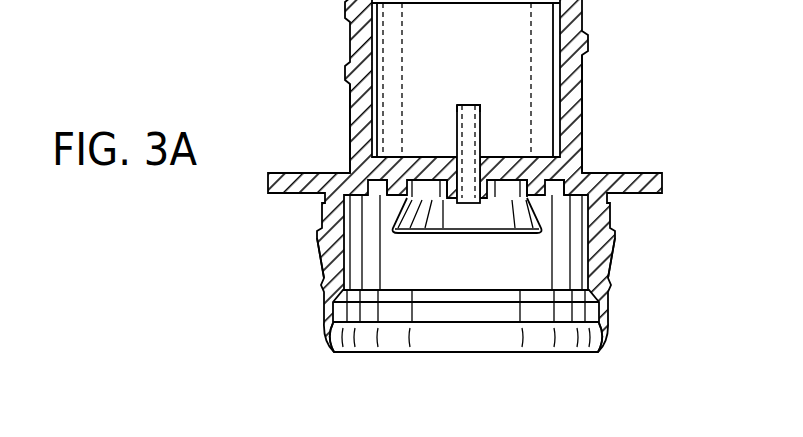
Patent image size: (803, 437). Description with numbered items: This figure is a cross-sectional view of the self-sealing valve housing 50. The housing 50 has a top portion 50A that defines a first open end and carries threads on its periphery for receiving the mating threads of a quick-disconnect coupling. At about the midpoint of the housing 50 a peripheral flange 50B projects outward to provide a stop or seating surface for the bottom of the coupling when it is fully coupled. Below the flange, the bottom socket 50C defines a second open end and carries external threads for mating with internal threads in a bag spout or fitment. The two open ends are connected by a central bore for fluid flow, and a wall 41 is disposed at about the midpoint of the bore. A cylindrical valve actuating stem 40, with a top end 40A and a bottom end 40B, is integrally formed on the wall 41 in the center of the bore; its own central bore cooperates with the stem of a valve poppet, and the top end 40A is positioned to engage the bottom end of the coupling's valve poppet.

The self-sealing valve housing 50 is at (485, 176).
The top portion 50A is at (583, 78).
The peripheral flange 50B is at (617, 173).
The bottom socket 50C is at (601, 287).
The cylindrical valve actuating stem 40 is at (484, 133).
The top end 40A is at (458, 106).
The bottom end 40B is at (469, 233).
The wall 41 is at (424, 157).